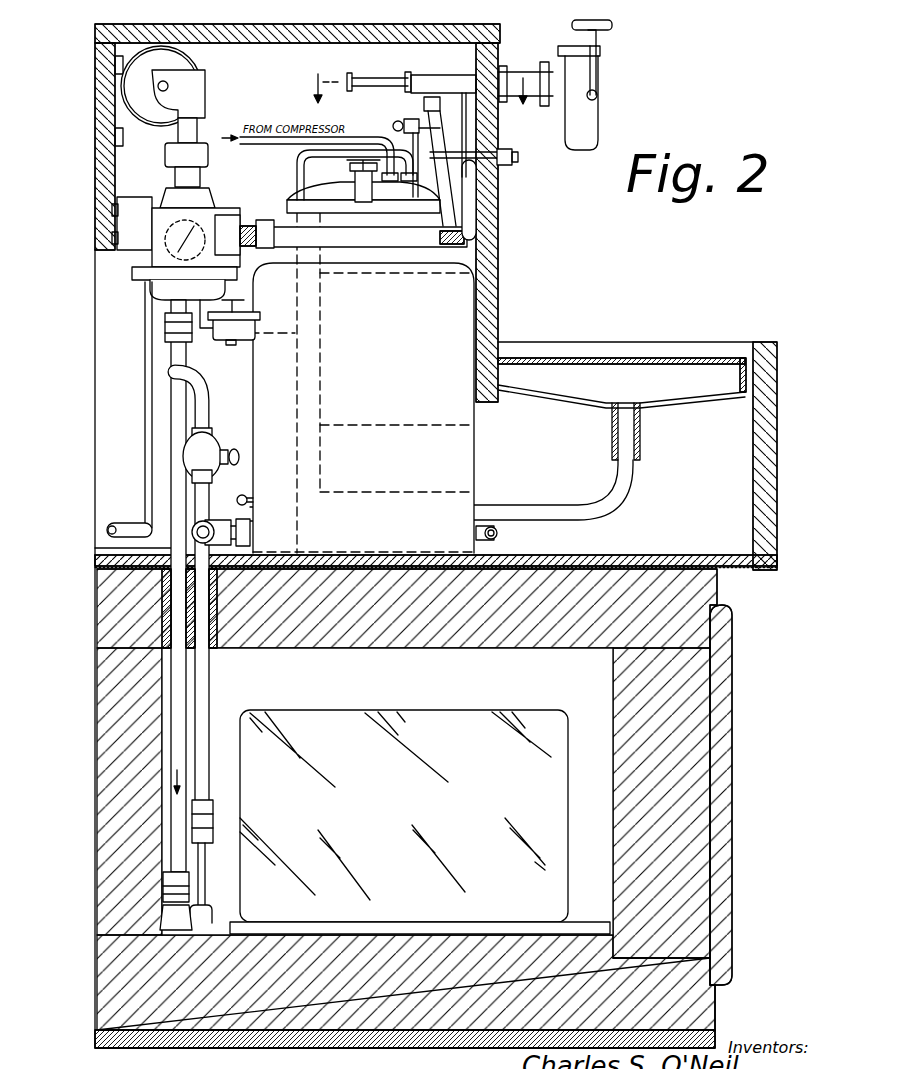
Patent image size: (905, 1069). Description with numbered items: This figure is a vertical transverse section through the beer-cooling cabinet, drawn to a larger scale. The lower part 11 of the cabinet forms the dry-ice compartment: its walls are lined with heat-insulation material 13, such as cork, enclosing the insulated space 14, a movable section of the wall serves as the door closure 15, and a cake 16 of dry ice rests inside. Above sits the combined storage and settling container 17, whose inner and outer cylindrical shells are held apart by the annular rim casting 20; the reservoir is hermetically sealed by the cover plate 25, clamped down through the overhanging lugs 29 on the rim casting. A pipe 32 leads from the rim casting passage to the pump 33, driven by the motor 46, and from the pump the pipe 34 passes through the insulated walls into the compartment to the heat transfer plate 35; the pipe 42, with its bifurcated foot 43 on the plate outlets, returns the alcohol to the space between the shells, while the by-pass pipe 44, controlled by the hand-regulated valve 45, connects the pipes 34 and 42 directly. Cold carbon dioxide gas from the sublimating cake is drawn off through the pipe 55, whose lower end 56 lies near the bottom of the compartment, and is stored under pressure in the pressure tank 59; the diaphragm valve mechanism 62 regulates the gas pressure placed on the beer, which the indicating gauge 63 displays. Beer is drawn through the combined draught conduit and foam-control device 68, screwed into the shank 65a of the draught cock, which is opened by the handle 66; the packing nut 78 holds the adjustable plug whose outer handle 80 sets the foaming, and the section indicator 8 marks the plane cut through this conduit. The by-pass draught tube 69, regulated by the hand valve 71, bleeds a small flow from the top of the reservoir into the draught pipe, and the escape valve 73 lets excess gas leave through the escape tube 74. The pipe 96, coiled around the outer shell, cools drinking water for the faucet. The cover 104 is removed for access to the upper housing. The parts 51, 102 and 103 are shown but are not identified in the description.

The cover 104 is at (97, 30).
The lower part of cabinet 11 is at (95, 912).
The heat-insulation material 13 is at (355, 645).
The insulated space 14 is at (387, 791).
The door closure 15 is at (726, 727).
The cake of dry ice 16 is at (404, 816).
The combined storage and settling container 17 is at (455, 309).
The annular rim casting 20 is at (285, 228).
The cover plate 25 is at (312, 190).
The overhanging lugs 29 is at (357, 176).
The pipe 32 is at (246, 226).
The pump 33 is at (218, 218).
The pipe 34 is at (172, 441).
The heat transfer plate 35 is at (580, 917).
The pipe 42 is at (209, 688).
The bifurcated foot 43 is at (206, 880).
The by-pass pipe 44 is at (196, 500).
The hand-regulated valve 45 is at (214, 450).
The motor 46 is at (198, 70).
The pipe 51 is at (499, 534).
The pipe 55 is at (190, 657).
The lower end of pipe 56 is at (162, 870).
The pressure tank 59 is at (478, 212).
The diaphragm valve mechanism 62 is at (243, 346).
The indicating gauge 63 is at (160, 247).
The shank 65a is at (521, 71).
The handle 66 is at (613, 27).
The combined draught conduit and foam-control device 68 is at (446, 78).
The by-pass draught tube 69 is at (422, 104).
The hand valve 71 is at (402, 126).
The escape valve 73 is at (514, 157).
The escape tube 74 is at (472, 160).
The packing nut 78 is at (411, 73).
The section line 8 is at (413, 100).
The handle 80 is at (354, 75).
The pipe 96 is at (468, 127).
The sink 102 is at (660, 360).
The drain pipe 103 is at (550, 508).